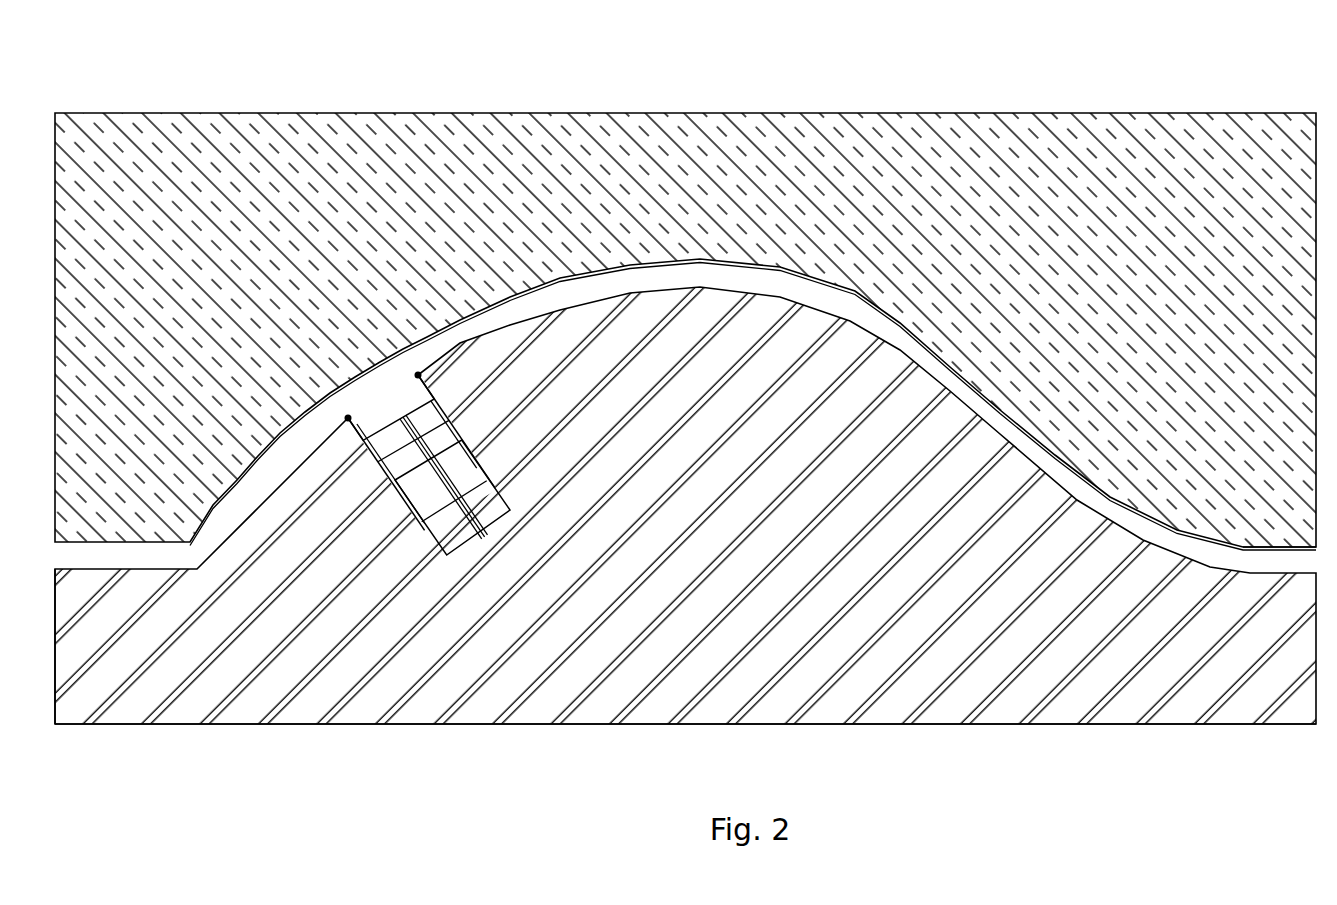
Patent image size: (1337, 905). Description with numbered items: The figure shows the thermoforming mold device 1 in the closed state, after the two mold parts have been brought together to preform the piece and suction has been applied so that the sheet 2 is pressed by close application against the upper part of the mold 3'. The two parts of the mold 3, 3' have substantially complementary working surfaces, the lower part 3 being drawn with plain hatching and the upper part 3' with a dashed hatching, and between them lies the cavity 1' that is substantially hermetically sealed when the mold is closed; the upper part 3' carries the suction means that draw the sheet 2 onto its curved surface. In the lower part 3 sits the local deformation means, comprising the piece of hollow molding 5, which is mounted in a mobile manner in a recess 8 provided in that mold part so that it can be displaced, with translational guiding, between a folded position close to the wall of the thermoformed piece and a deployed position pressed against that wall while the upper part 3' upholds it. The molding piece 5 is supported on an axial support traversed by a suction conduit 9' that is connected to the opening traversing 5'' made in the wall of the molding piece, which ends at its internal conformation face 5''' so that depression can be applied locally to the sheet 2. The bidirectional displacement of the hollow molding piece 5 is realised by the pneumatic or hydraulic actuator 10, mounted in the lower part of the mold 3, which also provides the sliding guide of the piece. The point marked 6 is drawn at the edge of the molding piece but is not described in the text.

The mold device 1 is at (684, 703).
The cavity 1' is at (1174, 300).
The sheet 2 is at (752, 265).
The lower part of the mold 3 is at (685, 539).
The upper part of the mold 3' is at (685, 300).
The piece of hollow molding 5 is at (461, 263).
The opening traversing 5'' is at (391, 245).
The internal conformation face 5''' is at (371, 258).
The sensor contact 6 is at (347, 415).
The recess 8 is at (490, 475).
The suction conduit 9' is at (487, 605).
The actuator 10 is at (445, 523).